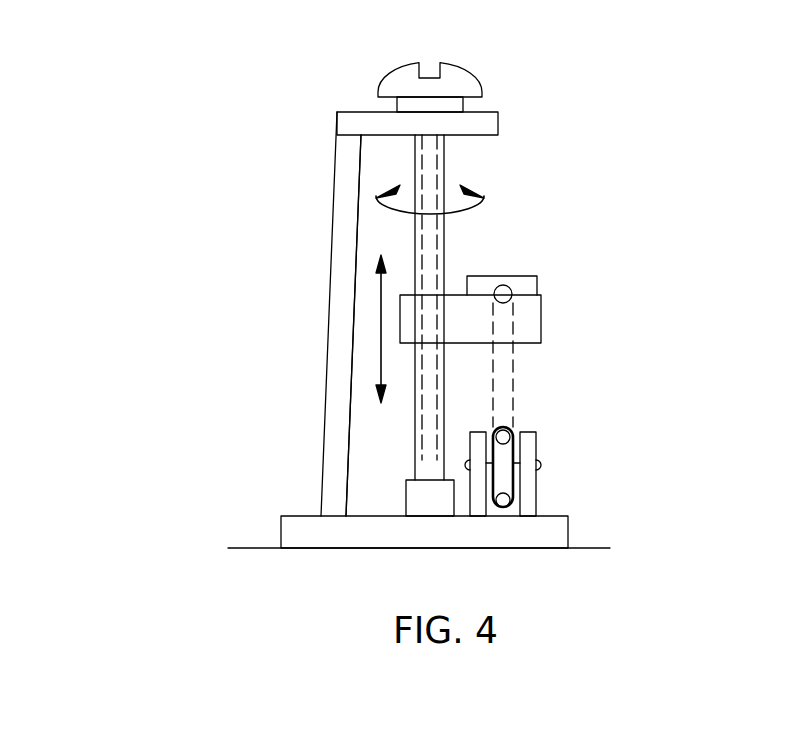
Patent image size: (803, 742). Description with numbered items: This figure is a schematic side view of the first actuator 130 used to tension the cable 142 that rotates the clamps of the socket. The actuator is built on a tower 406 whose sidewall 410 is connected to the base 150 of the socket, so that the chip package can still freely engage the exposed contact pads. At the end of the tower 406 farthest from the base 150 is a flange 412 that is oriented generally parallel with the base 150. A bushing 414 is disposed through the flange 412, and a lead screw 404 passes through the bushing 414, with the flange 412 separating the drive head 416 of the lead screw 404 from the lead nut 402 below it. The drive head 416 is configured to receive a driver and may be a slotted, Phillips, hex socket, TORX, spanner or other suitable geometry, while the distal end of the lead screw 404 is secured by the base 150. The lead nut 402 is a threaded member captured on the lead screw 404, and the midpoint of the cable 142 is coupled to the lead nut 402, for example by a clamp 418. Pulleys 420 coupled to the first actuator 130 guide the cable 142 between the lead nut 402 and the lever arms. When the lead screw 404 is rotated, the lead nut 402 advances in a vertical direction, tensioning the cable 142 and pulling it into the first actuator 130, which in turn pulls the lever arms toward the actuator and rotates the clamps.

The first actuator 130 is at (163, 261).
The drive head 416 is at (463, 78).
The bushing 414 is at (452, 105).
The flange 412 is at (487, 120).
The tower 406 is at (332, 245).
The sidewall 410 is at (340, 318).
The lead screw 404 is at (428, 162).
The clamp 418 is at (520, 283).
The lead nut 402 is at (541, 318).
The cable 142 is at (513, 392).
The pulleys 420 is at (500, 461).
The base 150 is at (298, 528).